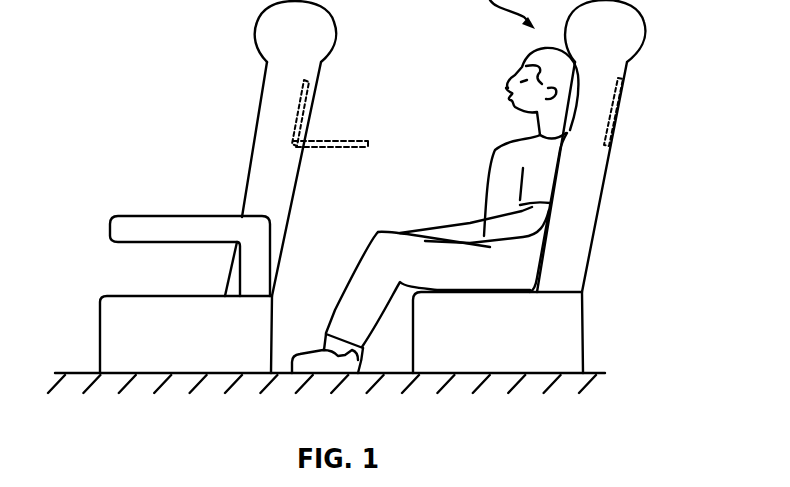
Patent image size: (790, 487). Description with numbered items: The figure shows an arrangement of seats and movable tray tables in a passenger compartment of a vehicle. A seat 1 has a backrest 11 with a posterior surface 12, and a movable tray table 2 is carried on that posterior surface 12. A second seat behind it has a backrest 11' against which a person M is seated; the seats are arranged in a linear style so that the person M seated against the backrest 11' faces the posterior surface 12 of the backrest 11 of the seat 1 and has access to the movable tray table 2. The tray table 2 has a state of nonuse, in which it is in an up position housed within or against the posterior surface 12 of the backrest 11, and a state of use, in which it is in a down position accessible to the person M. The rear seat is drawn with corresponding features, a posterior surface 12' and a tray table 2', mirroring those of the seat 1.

The seat 1 is at (207, 68).
The backrest 11 is at (263, 148).
The posterior surface 12 is at (237, 278).
The movable tray table 2 is at (347, 112).
The backrest 11' is at (616, 146).
The seat cushion of rear seat 12' is at (547, 292).
The table of rear seat 2' is at (648, 108).
The person M is at (507, 152).